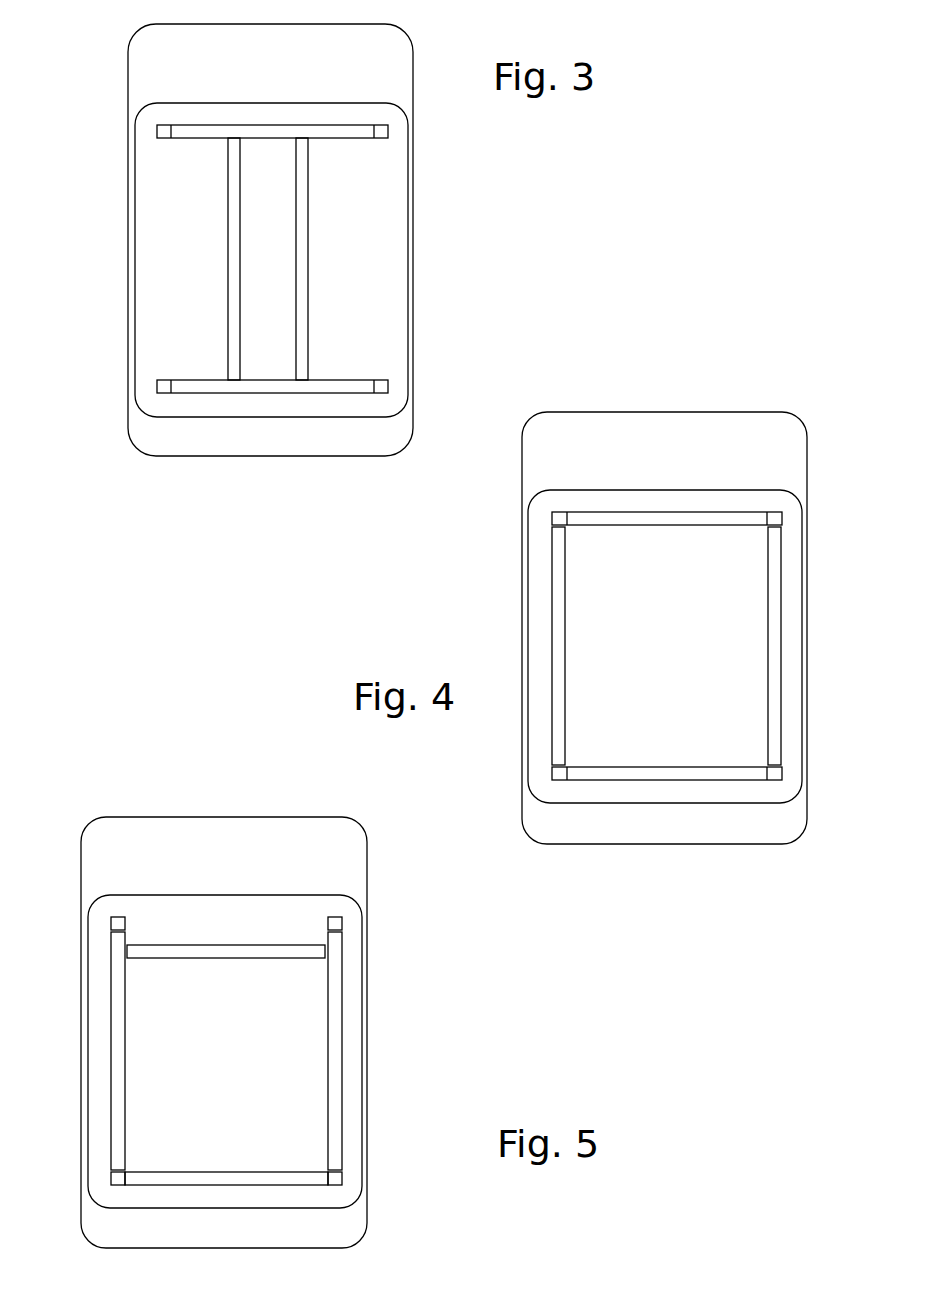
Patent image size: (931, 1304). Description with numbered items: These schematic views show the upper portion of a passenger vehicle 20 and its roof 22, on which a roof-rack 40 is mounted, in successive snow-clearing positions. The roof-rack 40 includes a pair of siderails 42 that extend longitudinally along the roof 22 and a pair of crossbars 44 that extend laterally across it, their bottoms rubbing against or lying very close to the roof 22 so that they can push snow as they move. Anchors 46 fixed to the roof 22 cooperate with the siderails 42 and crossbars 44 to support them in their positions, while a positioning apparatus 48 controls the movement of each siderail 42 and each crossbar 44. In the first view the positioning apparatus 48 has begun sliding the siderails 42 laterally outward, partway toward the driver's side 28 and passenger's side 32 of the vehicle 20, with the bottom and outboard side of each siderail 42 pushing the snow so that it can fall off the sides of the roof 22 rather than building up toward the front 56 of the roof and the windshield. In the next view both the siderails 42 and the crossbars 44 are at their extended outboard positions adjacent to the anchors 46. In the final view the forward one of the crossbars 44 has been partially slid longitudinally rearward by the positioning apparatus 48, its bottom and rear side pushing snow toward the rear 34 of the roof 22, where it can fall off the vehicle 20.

In FIG. 3, the passenger vehicle 20 is at (430, 142).
In FIG. 4, the passenger vehicle 20 is at (813, 533).
In FIG. 5, the passenger vehicle 20 is at (373, 938).
In FIG. 3, the roof 22 is at (350, 415).
In FIG. 4, the roof 22 is at (748, 805).
In FIG. 5, the roof 22 is at (308, 1210).
In FIG. 3, the driver's side 28 is at (128, 286).
In FIG. 4, the driver's side 28 is at (522, 678).
In FIG. 5, the driver's side 28 is at (81, 1083).
In FIG. 3, the passenger's side 32 is at (408, 183).
In FIG. 4, the passenger's side 32 is at (803, 573).
In FIG. 5, the passenger's side 32 is at (363, 978).
In FIG. 3, the rear 34 is at (263, 413).
In FIG. 4, the rear 34 is at (660, 805).
In FIG. 5, the rear 34 is at (219, 1210).
In FIG. 3, the roof-rack 40 is at (333, 112).
In FIG. 4, the roof-rack 40 is at (728, 504).
In FIG. 5, the roof-rack 40 is at (288, 909).
In FIG. 3, the siderails 42 is at (308, 296).
In FIG. 4, the siderails 42 is at (782, 690).
In FIG. 5, the siderails 42 is at (342, 1095).
In FIG. 3, the crossbars 44 is at (193, 138).
In FIG. 4, the crossbars 44 is at (590, 527).
In FIG. 5, the crossbars 44 is at (145, 960).
In FIG. 3, the anchors 46 is at (383, 378).
In FIG. 4, the anchors 46 is at (777, 770).
In FIG. 5, the anchors 46 is at (338, 1172).
In FIG. 3, the positioning apparatus 48 is at (148, 395).
In FIG. 4, the positioning apparatus 48 is at (545, 785).
In FIG. 5, the positioning apparatus 48 is at (105, 1190).
In FIG. 3, the front of the roof 56 is at (203, 100).
In FIG. 4, the front of the roof 56 is at (598, 490).
In FIG. 5, the front of the roof 56 is at (157, 895).